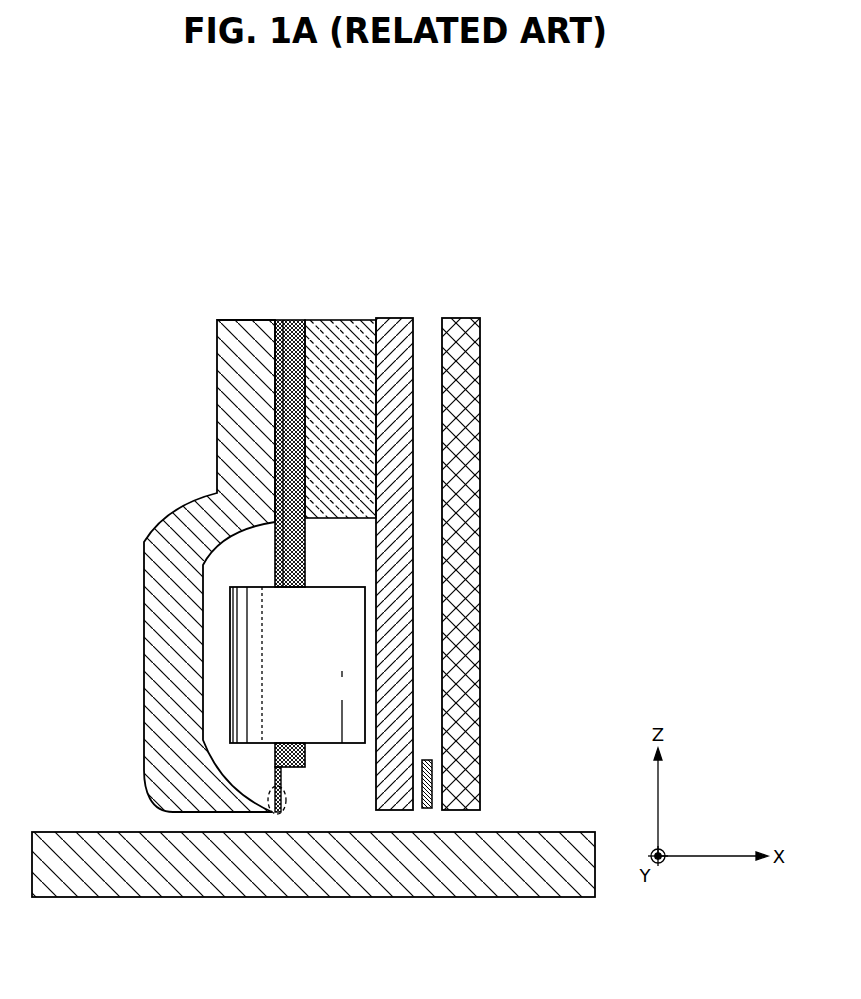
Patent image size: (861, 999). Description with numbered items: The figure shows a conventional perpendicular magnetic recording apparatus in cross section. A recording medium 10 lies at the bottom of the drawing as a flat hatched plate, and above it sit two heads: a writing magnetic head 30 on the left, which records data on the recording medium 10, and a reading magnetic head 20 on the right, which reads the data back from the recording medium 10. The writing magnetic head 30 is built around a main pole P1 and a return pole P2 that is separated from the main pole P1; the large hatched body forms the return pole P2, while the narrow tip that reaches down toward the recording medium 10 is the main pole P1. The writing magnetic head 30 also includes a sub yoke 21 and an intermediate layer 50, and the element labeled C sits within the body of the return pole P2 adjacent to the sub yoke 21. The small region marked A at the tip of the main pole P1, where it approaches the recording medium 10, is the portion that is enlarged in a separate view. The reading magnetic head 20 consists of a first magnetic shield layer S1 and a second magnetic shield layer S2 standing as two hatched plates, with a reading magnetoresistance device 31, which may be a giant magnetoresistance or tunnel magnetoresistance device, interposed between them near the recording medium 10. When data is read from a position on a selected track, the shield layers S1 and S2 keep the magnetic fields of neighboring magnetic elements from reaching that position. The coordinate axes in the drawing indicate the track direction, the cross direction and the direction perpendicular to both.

The recording medium 10 is at (451, 890).
The reading magnetic head 20 is at (480, 300).
The sub yoke 21 is at (307, 757).
The writing magnetic head 30 is at (217, 300).
The reading magnetoresistance device 31 is at (432, 781).
The intermediate layer 50 is at (315, 407).
The main pole P1 is at (253, 767).
The return pole P2 is at (150, 633).
The portion A is at (286, 803).
The capacitor / coil element C is at (360, 602).
The first magnetic shield layer S1 is at (398, 672).
The second magnetic shield layer S2 is at (478, 718).